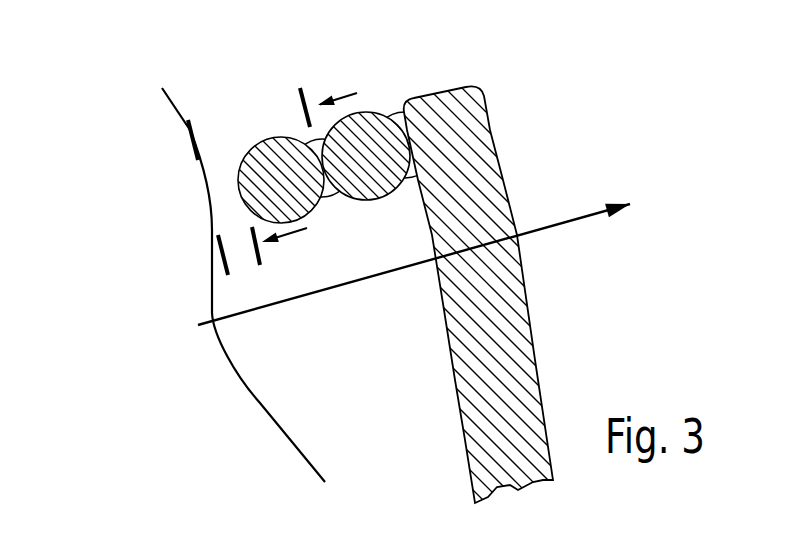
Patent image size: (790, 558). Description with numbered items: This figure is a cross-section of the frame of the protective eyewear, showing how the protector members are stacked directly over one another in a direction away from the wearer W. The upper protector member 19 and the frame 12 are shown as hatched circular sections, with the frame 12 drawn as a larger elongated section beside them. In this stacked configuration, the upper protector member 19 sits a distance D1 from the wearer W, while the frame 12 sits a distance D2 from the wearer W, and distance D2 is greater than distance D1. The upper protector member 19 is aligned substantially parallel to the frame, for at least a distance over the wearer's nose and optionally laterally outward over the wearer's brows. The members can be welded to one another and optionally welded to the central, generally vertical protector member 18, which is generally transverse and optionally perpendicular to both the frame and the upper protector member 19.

The frame 12 is at (362, 135).
The central vertical protector member 18 is at (470, 105).
The upper protector member 19 is at (283, 172).
The wearer W is at (260, 400).
The distance D1 is at (199, 262).
The distance D2 is at (172, 146).